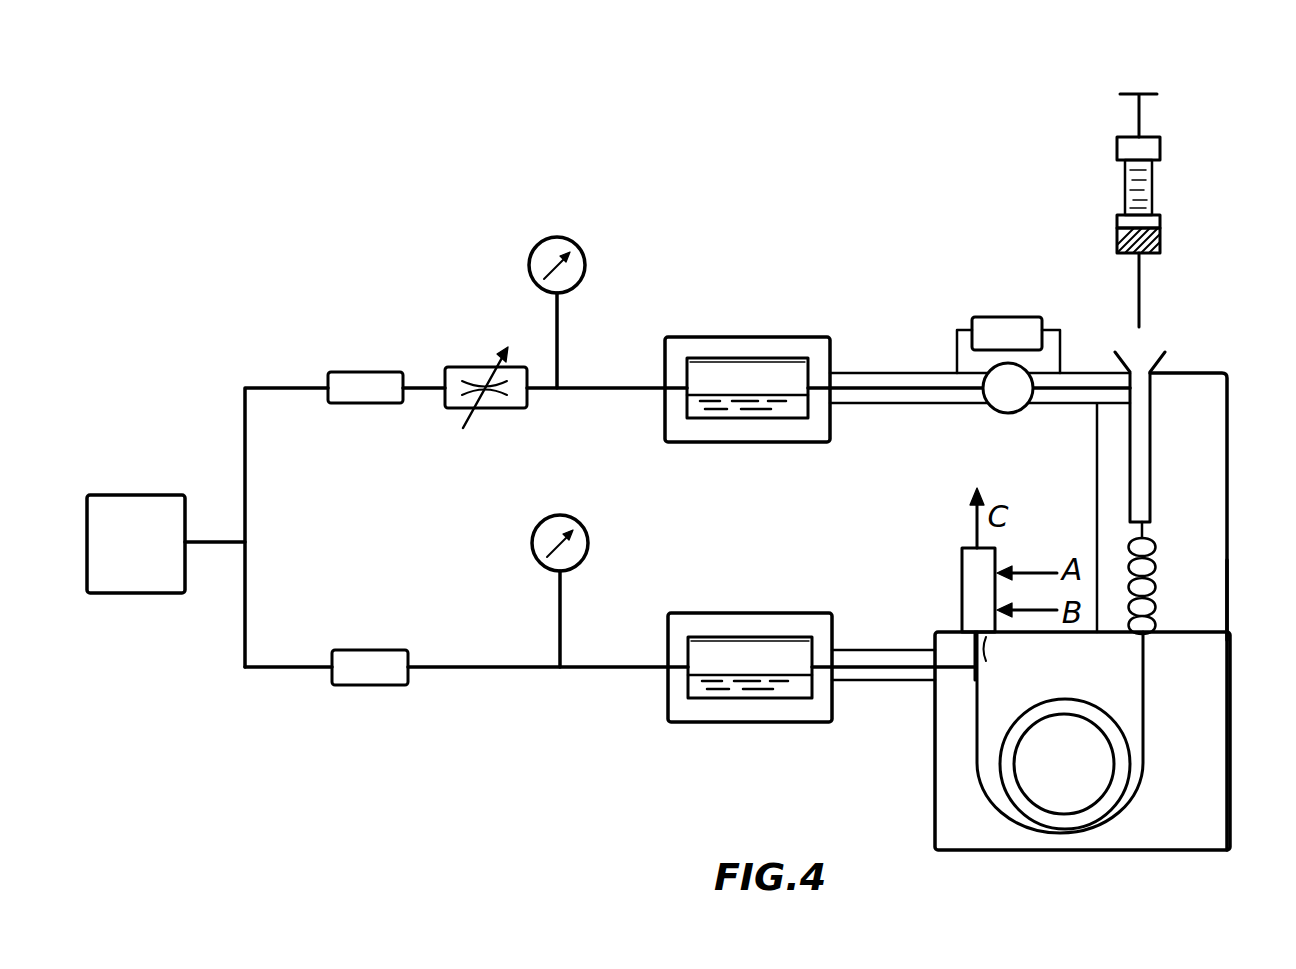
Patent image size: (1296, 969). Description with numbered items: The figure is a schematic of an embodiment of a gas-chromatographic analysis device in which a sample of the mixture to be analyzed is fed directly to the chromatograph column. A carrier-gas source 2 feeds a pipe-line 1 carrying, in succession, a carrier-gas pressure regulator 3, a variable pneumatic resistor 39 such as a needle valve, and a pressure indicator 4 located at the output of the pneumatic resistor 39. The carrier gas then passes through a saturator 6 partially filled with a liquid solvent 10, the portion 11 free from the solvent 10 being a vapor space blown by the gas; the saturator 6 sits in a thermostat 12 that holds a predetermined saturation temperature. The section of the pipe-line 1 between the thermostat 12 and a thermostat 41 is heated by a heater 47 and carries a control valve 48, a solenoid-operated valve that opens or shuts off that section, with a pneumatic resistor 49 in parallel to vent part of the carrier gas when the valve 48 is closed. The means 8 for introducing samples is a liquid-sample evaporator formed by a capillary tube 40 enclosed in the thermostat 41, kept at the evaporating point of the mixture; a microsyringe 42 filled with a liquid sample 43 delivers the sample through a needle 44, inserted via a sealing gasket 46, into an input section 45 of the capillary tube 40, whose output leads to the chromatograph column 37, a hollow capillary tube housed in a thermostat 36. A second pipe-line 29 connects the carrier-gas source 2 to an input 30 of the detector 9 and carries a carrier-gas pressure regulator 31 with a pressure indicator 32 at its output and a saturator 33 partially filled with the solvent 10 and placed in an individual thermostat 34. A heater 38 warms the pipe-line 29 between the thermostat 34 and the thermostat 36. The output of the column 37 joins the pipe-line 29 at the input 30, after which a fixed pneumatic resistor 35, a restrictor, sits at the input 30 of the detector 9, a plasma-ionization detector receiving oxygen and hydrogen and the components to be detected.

The pipe-line 1 is at (245, 495).
The carrier-gas source 2 is at (166, 544).
The carrier-gas pressure regulator 3 is at (376, 372).
The pressure indicator 4 is at (586, 262).
The saturator 6 is at (710, 355).
The means for introducing samples 8 is at (1236, 408).
The detector 9 is at (962, 577).
The liquid solvent 10 is at (770, 410).
The portion of the saturator free from the solvent 11 is at (730, 365).
The thermostat 12 is at (775, 442).
The pipe-line 29 is at (245, 634).
The input of the detector 30 is at (966, 643).
The carrier-gas pressure regulator 31 is at (368, 652).
The pressure indicator 32 is at (589, 546).
The saturator 33 is at (740, 637).
The thermostat 34 is at (793, 714).
The fixed pneumatic resistor 35 is at (987, 642).
The thermostat 36 is at (1203, 824).
The chromatograph column 37 is at (1146, 758).
The heater 38 is at (909, 685).
The variable pneumatic resistor 39 is at (460, 373).
The capillary tube 40 is at (1155, 576).
The thermostat 41 is at (1215, 618).
The microsyringe 42 is at (1150, 202).
The liquid sample 43 is at (1148, 180).
The needle 44 is at (1140, 294).
The input section of the capillary tube 45 is at (1152, 454).
The sealing gasket 46 is at (1160, 232).
The heater 47 is at (882, 372).
The control valve 48 is at (1013, 401).
The pneumatic resistor 49 is at (1008, 320).